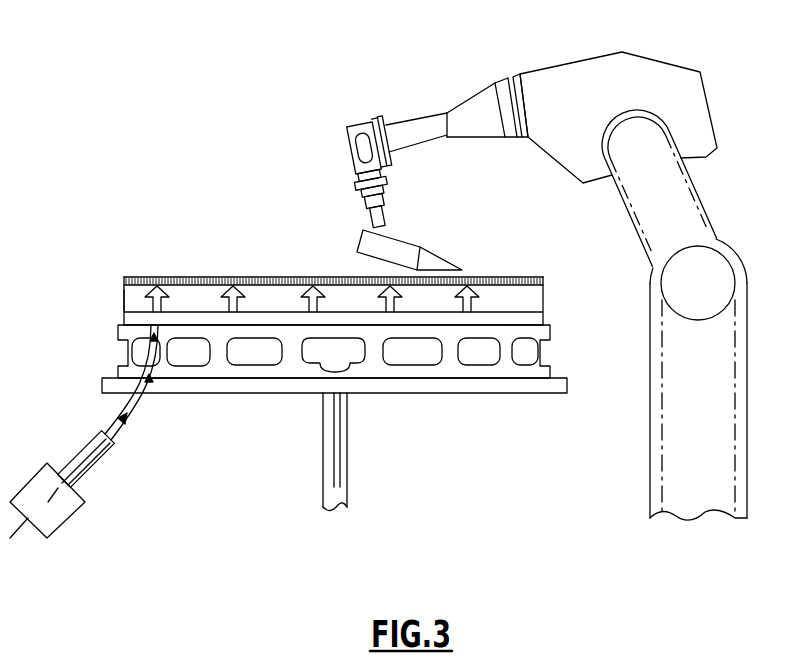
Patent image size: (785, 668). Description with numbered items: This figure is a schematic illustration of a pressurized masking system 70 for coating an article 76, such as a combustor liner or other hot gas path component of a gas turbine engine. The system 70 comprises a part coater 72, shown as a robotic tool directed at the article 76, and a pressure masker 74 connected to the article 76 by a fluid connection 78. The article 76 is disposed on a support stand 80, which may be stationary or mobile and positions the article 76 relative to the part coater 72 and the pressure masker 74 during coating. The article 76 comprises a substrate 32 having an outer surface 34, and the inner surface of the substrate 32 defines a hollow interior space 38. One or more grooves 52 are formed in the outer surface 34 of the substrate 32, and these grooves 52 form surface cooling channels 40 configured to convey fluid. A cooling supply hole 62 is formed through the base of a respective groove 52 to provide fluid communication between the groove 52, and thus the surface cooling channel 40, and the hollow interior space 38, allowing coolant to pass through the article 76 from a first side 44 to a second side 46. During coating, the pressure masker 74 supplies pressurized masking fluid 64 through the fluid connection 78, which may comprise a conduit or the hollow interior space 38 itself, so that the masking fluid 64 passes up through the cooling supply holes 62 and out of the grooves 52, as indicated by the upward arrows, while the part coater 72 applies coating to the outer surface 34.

The pressurized masking system 70 is at (200, 123).
The part coater 72 is at (414, 243).
The substrate 32 is at (516, 298).
The outer surface 34 is at (182, 284).
The second side 46 is at (272, 278).
The surface cooling channel 40 is at (233, 292).
The groove 52 is at (311, 287).
The cooling supply hole 62 is at (393, 313).
The first side 44 is at (262, 303).
The hollow interior space 38 is at (547, 319).
The support stand 80 is at (473, 388).
The article 76 is at (128, 302).
The pressurized masking fluid 64 is at (117, 428).
The fluid connection 78 is at (108, 428).
The pressure masker 74 is at (72, 517).